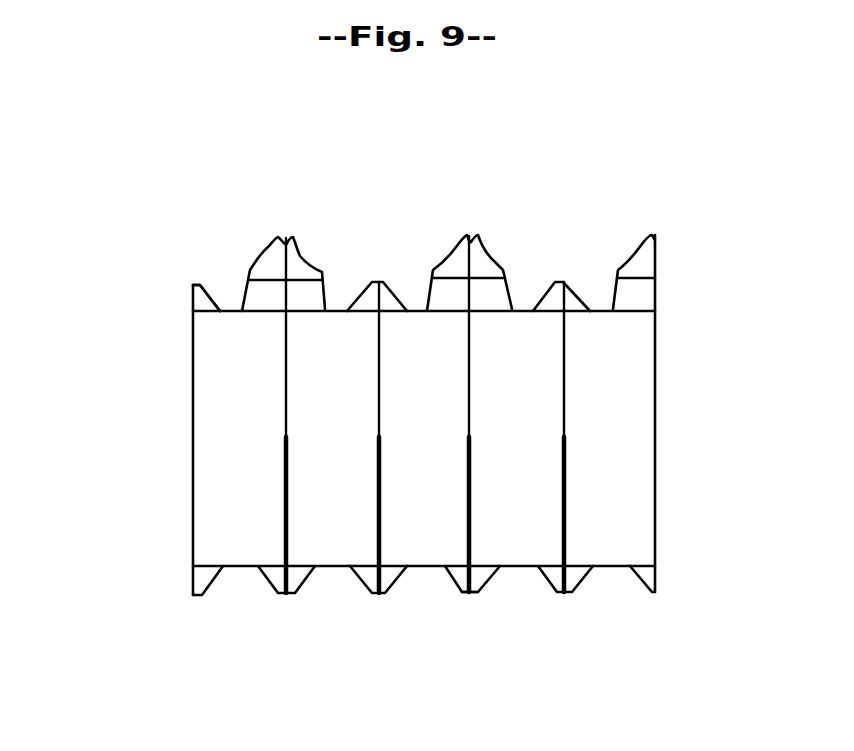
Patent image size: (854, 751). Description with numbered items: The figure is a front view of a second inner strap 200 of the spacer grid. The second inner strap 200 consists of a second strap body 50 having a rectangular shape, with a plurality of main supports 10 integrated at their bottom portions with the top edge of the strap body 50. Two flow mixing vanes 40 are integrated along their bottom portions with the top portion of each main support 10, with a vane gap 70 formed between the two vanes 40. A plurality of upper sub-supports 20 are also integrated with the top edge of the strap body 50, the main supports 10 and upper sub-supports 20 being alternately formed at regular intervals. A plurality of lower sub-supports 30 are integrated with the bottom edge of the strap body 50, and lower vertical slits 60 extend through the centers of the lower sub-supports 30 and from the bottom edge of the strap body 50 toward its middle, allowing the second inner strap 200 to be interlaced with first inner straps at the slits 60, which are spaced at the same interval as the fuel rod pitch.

The second inner strap 200 is at (168, 168).
The main support 10 is at (252, 303).
The upper sub-support 20 is at (587, 306).
The lower sub-support 30 is at (467, 580).
The flow mixing vane 40 is at (294, 242).
The second strap body 50 is at (200, 418).
The lower vertical slit 60 is at (565, 508).
The vane gap 70 is at (467, 237).